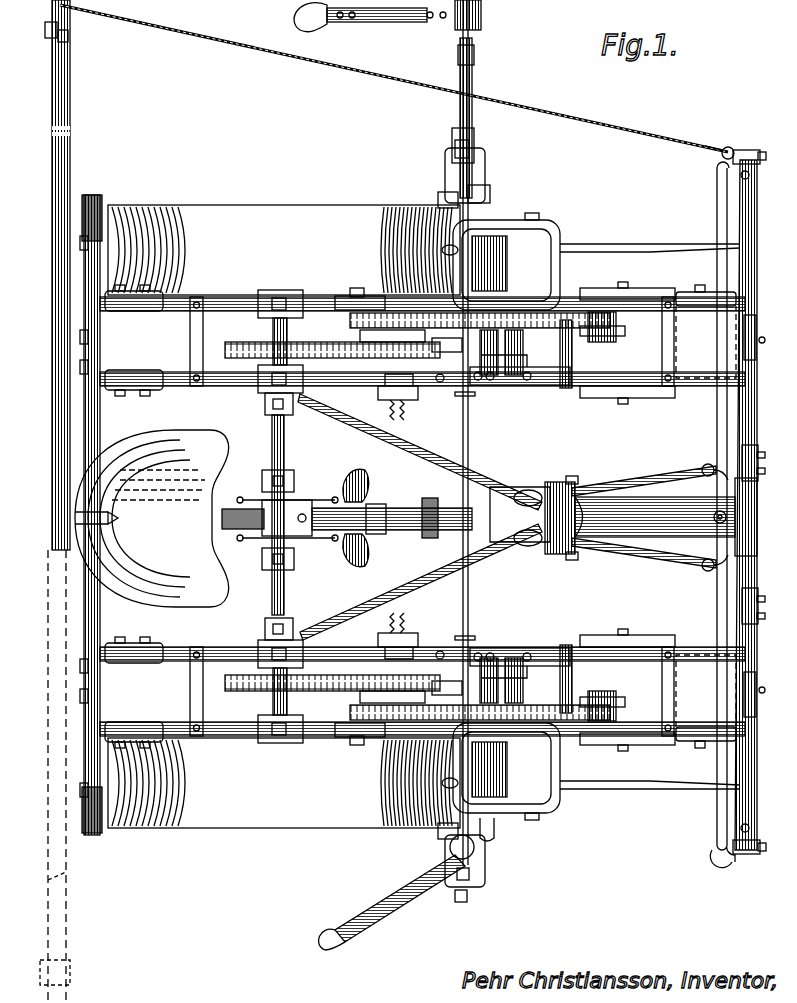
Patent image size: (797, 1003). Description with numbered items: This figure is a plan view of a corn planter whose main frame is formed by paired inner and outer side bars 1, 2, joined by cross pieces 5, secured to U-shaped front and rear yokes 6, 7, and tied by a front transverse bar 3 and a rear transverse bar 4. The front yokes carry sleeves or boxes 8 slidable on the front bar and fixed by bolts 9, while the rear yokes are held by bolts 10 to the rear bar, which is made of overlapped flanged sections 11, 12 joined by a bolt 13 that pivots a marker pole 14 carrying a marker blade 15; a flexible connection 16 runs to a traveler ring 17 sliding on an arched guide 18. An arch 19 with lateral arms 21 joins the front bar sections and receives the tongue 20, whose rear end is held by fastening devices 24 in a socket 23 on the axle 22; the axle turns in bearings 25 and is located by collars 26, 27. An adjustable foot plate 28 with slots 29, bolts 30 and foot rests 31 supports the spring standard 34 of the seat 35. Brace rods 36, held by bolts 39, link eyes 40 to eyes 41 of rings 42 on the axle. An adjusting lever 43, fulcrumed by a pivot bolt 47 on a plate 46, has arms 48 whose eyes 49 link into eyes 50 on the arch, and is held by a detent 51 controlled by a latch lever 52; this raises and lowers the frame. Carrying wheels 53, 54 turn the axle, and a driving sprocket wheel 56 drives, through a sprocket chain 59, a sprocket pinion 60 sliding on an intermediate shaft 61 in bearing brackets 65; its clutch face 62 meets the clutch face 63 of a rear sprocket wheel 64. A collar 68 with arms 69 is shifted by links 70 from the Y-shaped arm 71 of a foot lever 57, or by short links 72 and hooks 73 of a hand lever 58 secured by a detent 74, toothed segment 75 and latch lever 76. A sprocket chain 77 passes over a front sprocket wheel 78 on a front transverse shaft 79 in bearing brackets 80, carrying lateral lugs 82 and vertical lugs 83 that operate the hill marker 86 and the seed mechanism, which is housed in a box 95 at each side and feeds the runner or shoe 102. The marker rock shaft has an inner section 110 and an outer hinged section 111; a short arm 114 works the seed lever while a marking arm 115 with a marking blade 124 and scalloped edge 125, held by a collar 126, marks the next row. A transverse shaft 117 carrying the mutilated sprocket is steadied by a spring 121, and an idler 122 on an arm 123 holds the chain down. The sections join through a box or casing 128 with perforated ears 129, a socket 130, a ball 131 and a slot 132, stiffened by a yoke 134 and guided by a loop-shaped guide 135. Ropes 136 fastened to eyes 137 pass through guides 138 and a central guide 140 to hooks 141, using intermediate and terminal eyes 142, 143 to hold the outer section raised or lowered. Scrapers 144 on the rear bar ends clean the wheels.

The inner side bar 1 is at (651, 516).
The outer side bar 2 is at (651, 533).
The front transverse bar 3 is at (754, 502).
The rear transverse bar 4 is at (402, 756).
The cross piece 5 is at (772, 320).
The front yoke 6 is at (700, 292).
The rear yoke 7 is at (138, 388).
The sleeve or box 8 is at (759, 514).
The bolt 9 is at (769, 518).
The bolt 10 is at (96, 336).
The flanged section 11 is at (116, 611).
The flanged section 12 is at (120, 429).
The bolt 13 is at (102, 525).
The marker pole 14 is at (63, 515).
The marker blade 15 is at (56, 42).
The flexible connection 16 is at (305, 58).
The traveler ring 17 is at (729, 146).
The guide 18 is at (716, 212).
The arch 19 is at (747, 517).
The tongue 20 is at (655, 517).
The lateral arm 21 is at (758, 523).
The axle 22 is at (284, 590).
The socket 23 is at (296, 540).
The fastening device 24 is at (290, 507).
The bearing 25 is at (262, 392).
The collar 26 is at (270, 412).
The collar 27 is at (268, 530).
The foot plate 28 is at (380, 504).
The longitudinal slot 29 is at (343, 522).
The bolt 30 is at (370, 492).
The foot rest 31 is at (358, 521).
The spring standard 34 is at (367, 518).
The seat 35 is at (152, 518).
The brace rod 36 is at (420, 517).
The bolt 39 is at (580, 520).
The eye 40 is at (531, 518).
The eye 41 is at (313, 532).
The collar or ring 42 is at (262, 405).
The adjusting lever 43 is at (508, 525).
The plate 46 is at (512, 548).
The pivot bolt 47 is at (556, 480).
The arm 48 is at (644, 520).
The eye 49 is at (700, 523).
The eye 50 is at (705, 523).
The pawl or detent 51 is at (571, 591).
The latch lever 52 is at (462, 540).
The carrying wheel 53 is at (284, 783).
The carrying wheel 54 is at (284, 250).
The driving sprocket wheel 56 is at (235, 518).
The foot lever 57 is at (386, 446).
The hand lever 58 is at (361, 606).
The sprocket chain 59 is at (298, 523).
The sprocket pinion 60 is at (441, 521).
The intermediate shaft 61 is at (356, 288).
The clutch face 62 is at (412, 519).
The clutch face 63 is at (358, 519).
The rear sprocket wheel 64 is at (338, 514).
The bearing bracket 65 is at (430, 396).
The collar 68 is at (331, 395).
The arm 69 is at (391, 418).
The link 70 is at (456, 426).
The Y-shaped arm 71 is at (389, 421).
The short link 72 is at (431, 631).
The terminal hook 73 is at (406, 622).
The detent 74 is at (416, 616).
The toothed segment 75 is at (446, 598).
The latch lever 76 is at (378, 495).
The sprocket chain 77 is at (540, 506).
The front sprocket wheel 78 is at (604, 515).
The front transverse shaft 79 is at (572, 362).
The bearing bracket 80 is at (630, 517).
The lateral lug 82 is at (345, 298).
The vertical lug 83 is at (618, 515).
The hill marker 86 is at (465, 470).
The box 95 is at (512, 522).
The runner or shoe 102 is at (598, 250).
The inner section 110 is at (436, 507).
The outer hinged section 111 is at (474, 92).
The short arm 114 is at (460, 250).
The marking arm 115 is at (488, 475).
The transverse shaft 117 is at (531, 517).
The spring 121 is at (531, 516).
The idler 122 is at (490, 514).
The arm 123 is at (501, 525).
The marking blade 124 is at (330, 24).
The scalloped edge 125 is at (294, 17).
The collar 126 is at (457, 433).
The box or casing 128 is at (476, 137).
The perforated ear 129 is at (455, 140).
The socket 130 is at (486, 177).
The ball 131 is at (490, 190).
The slot 132 is at (452, 184).
The yoke 134 is at (440, 196).
The loop-shaped guide 135 is at (486, 155).
The rope 136 is at (470, 430).
The eye 137 is at (474, 66).
The guide 138 is at (474, 516).
The central guide 140 is at (432, 496).
The hook 141 is at (243, 528).
The intermediate eye 142 is at (436, 486).
The terminal eye 143 is at (246, 549).
The scraper 144 is at (105, 230).